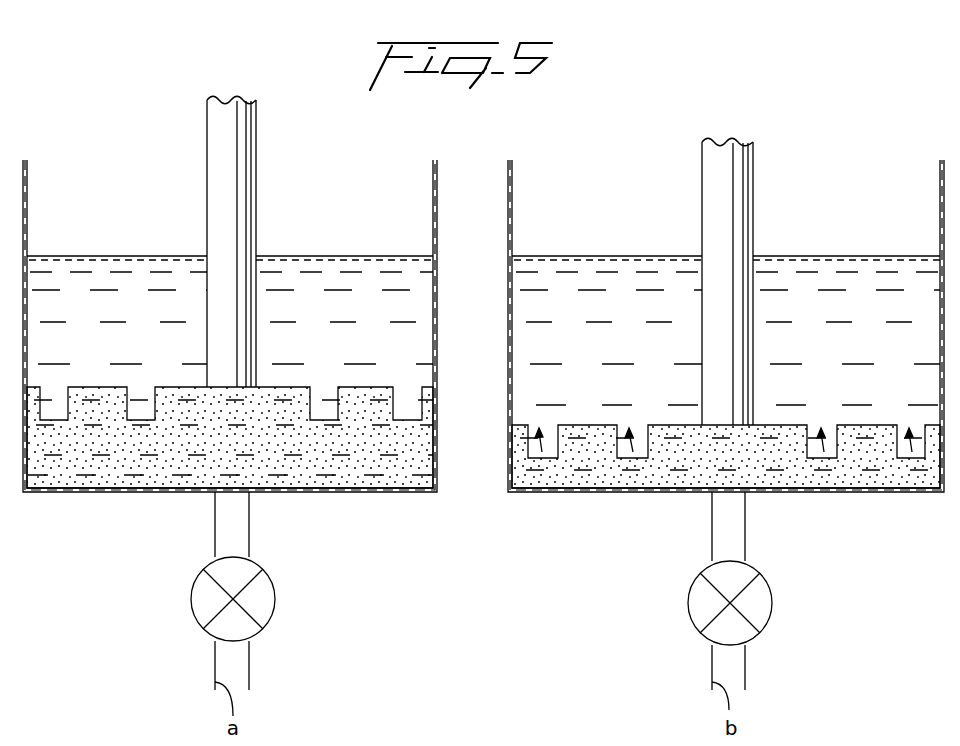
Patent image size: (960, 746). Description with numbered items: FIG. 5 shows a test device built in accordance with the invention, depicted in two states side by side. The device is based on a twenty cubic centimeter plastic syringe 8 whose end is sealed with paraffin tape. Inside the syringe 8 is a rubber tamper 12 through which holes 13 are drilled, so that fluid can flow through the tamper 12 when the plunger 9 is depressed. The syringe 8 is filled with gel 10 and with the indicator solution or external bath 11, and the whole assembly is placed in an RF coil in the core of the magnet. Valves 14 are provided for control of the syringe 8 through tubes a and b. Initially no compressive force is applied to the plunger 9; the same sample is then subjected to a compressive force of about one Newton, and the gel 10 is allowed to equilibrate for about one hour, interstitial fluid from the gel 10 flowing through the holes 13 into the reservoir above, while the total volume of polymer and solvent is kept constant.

The plastic syringe 8 is at (153, 515).
The plunger 9 is at (693, 163).
The gel 10 is at (592, 475).
The indicator solution or external bath 11 is at (583, 310).
The rubber tamper 12 is at (442, 427).
The holes 13 is at (637, 432).
The valves 14 is at (683, 620).